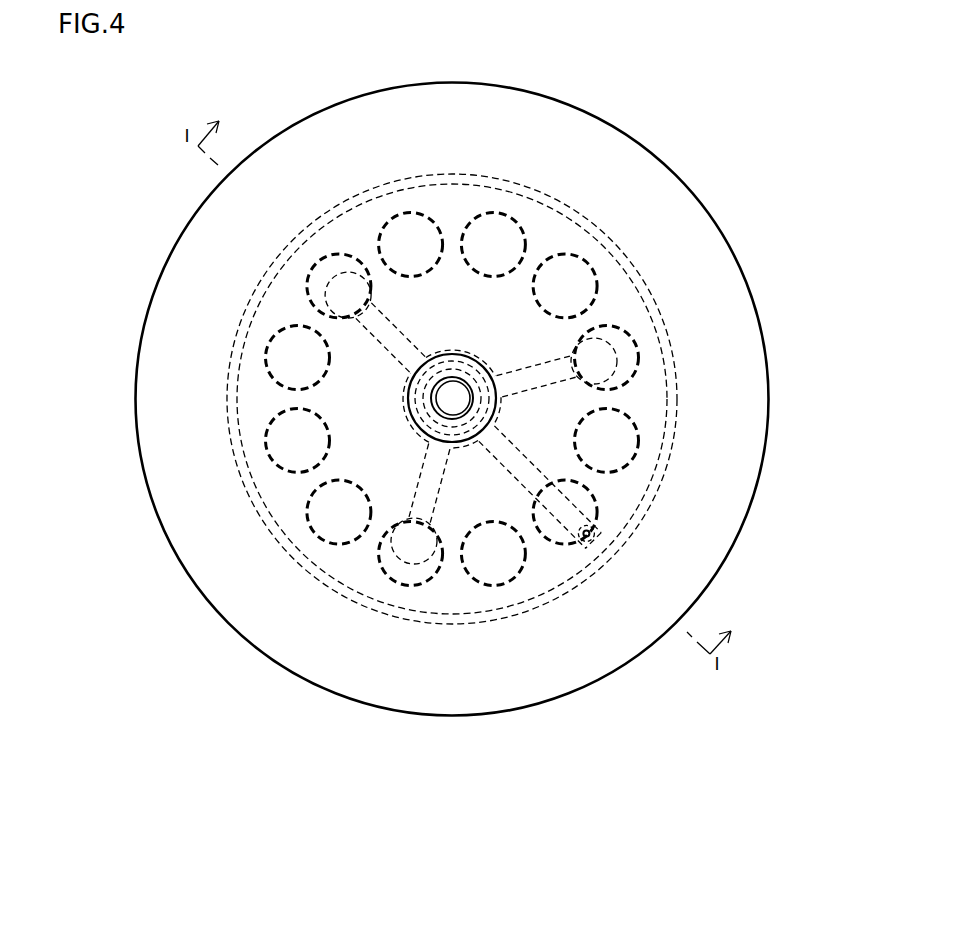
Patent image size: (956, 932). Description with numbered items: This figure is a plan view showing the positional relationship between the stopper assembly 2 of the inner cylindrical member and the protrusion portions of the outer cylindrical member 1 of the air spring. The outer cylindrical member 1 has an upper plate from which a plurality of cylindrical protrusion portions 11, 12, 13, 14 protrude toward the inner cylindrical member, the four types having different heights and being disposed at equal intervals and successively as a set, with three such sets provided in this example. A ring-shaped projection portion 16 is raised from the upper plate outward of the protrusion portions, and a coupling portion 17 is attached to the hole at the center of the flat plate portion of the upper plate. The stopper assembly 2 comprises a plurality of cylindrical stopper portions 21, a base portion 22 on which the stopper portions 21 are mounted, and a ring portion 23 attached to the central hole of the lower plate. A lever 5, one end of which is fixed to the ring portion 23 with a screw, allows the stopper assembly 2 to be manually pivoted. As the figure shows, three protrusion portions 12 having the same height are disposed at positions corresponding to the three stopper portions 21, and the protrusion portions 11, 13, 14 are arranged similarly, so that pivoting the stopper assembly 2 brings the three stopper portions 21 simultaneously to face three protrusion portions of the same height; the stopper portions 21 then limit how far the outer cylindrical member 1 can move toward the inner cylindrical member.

The outer cylindrical member 1 is at (735, 312).
The stopper assembly 2 is at (471, 532).
The lever 5 is at (537, 472).
The protrusion portion 11 is at (575, 273).
The protrusion portion 12 is at (322, 273).
The protrusion portion 13 is at (412, 228).
The protrusion portion 14 is at (495, 228).
The ring-shaped projection portion 16 is at (650, 282).
The coupling portion 17 is at (448, 411).
The stopper portion 21 is at (421, 547).
The base portion 22 is at (430, 488).
The ring portion 23 is at (453, 432).